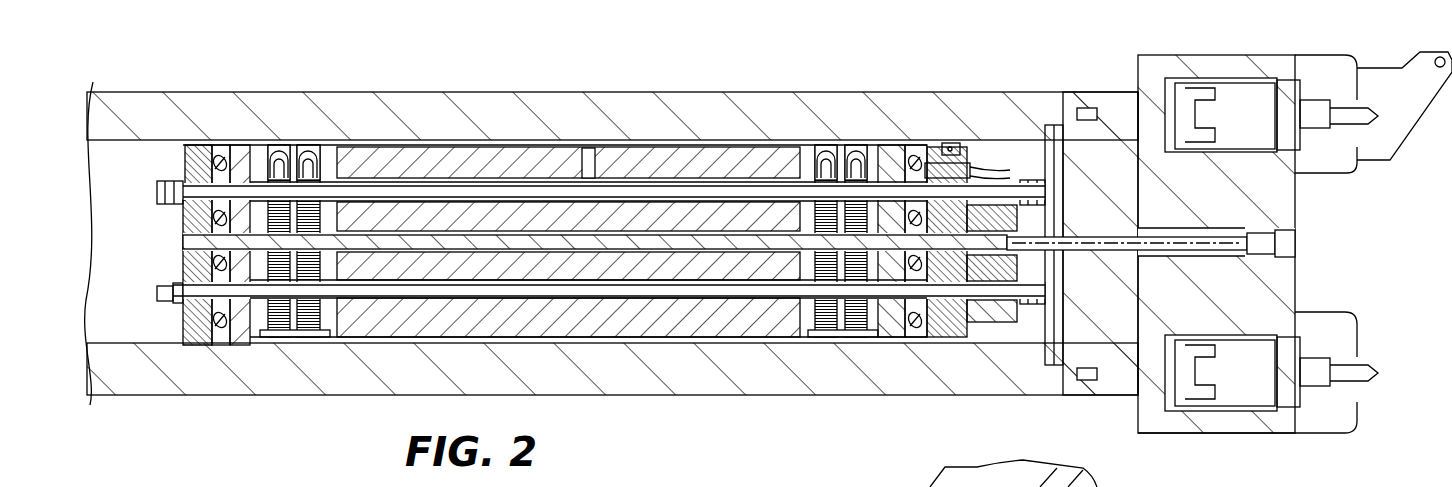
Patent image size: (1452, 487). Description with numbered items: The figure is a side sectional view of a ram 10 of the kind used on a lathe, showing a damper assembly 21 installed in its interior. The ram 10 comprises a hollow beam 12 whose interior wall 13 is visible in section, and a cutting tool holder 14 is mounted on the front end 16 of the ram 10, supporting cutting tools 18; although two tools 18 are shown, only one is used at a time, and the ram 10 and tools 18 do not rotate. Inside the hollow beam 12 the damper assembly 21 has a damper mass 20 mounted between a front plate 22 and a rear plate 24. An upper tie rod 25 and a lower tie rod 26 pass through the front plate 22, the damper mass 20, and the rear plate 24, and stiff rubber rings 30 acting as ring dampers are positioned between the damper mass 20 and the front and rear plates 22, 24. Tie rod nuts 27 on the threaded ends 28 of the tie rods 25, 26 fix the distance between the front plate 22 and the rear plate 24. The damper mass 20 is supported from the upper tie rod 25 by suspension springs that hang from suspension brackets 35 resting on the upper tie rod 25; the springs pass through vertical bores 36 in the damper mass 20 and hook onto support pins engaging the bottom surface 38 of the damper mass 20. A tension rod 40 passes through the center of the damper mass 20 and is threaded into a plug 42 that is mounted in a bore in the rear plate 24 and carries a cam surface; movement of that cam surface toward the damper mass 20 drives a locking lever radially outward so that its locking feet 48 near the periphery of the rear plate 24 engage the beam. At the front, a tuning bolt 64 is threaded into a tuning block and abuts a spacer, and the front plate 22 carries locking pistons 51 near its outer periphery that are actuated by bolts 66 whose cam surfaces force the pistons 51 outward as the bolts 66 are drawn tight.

The ram 10 is at (398, 53).
The hollow beam 12 is at (649, 100).
The interior wall 13 is at (128, 143).
The cutting tool holder 14 is at (1234, 50).
The front end 16 is at (1012, 62).
The cutting tool 18 is at (1428, 62).
The damper mass 20 is at (645, 265).
The damper assembly 21 is at (560, 334).
The front plate 22 is at (942, 270).
The rear plate 24 is at (207, 330).
The upper tie rod 25 is at (490, 190).
The lower tie rod 26 is at (367, 295).
The tie rod nut 27 is at (173, 285).
The threaded end 28 is at (158, 296).
The stiff rubber ring 30 is at (224, 270).
The suspension bracket 35 is at (976, 473).
The vertical bore 36 is at (328, 155).
The bottom surface 38 is at (410, 340).
The tension rod 40 is at (705, 245).
The plug 42 is at (183, 228).
The locking foot 48 is at (208, 148).
The locking piston 51 is at (946, 143).
The tuning bolt 64 is at (1107, 236).
The bolt 66 is at (975, 160).